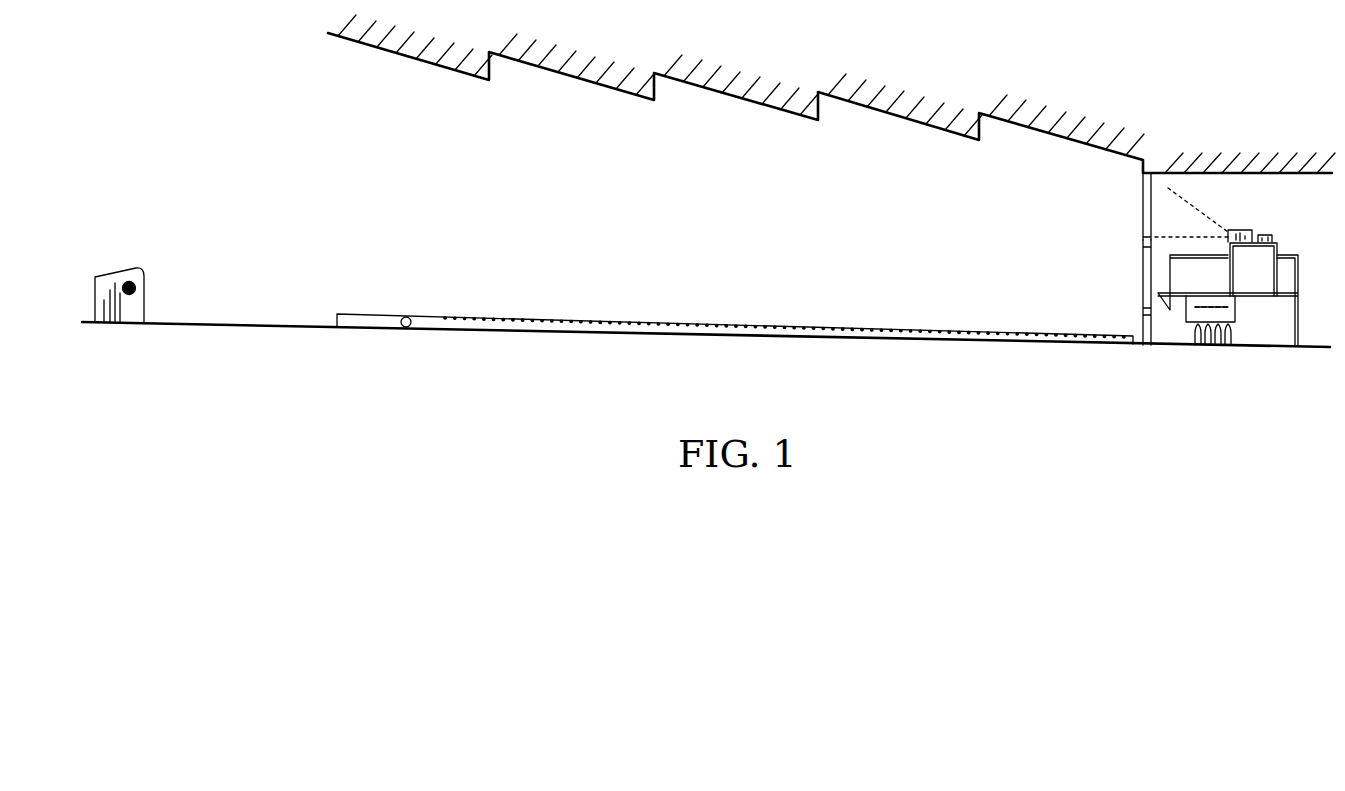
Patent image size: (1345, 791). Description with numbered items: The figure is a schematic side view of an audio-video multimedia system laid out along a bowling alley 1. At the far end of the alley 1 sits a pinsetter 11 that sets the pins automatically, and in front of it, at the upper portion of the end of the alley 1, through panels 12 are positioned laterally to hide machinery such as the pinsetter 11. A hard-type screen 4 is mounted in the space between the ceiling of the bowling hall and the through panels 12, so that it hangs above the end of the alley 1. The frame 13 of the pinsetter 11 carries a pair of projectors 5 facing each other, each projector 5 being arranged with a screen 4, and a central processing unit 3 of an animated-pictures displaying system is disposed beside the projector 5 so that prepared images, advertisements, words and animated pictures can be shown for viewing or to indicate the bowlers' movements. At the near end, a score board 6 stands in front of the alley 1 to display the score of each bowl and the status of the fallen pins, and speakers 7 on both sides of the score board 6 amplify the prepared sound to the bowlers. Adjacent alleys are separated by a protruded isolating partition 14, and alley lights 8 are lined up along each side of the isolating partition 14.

The alley 1 is at (357, 314).
The central processing unit 3 is at (1265, 236).
The screen 4 is at (1143, 203).
The projector 5 is at (1240, 230).
The score board 6 is at (132, 258).
The speaker 7 is at (137, 277).
The alley light 8 is at (603, 320).
The pinsetter 11 is at (1232, 322).
The through panel 12 is at (1143, 273).
The frame 13 is at (1275, 272).
The isolating partition 14 is at (430, 318).